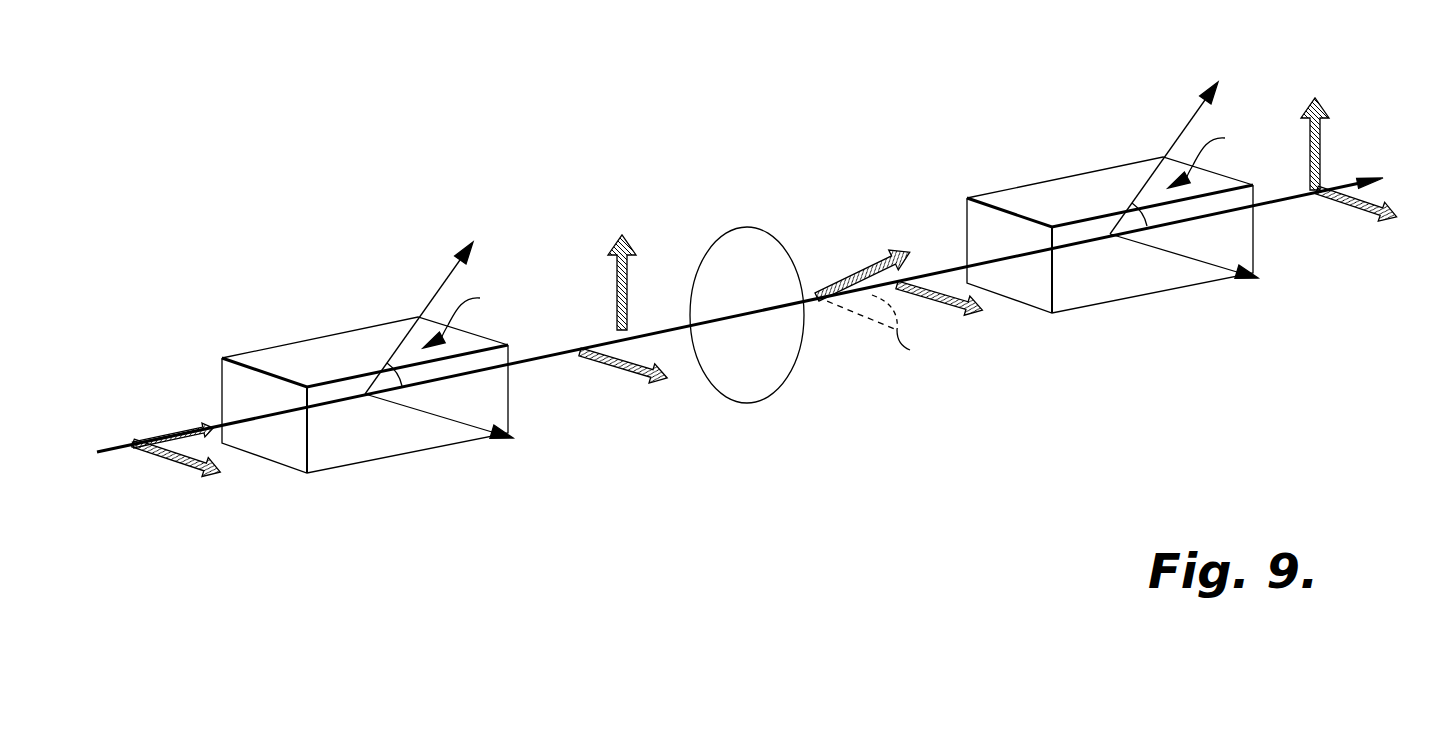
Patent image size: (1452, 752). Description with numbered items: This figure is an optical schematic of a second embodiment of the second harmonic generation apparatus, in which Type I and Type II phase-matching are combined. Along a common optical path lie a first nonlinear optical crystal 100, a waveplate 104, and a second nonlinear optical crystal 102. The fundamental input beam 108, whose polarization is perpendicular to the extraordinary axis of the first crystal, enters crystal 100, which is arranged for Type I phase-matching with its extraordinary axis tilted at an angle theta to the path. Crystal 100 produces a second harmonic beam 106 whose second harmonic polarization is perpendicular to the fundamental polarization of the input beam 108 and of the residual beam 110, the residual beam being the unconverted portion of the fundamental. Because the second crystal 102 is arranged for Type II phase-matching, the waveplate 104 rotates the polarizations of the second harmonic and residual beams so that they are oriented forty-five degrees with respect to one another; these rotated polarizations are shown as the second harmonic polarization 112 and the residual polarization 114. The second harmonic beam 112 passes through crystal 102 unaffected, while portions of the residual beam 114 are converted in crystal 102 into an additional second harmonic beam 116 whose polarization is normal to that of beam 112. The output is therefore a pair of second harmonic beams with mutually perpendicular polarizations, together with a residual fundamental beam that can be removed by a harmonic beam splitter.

The nonlinear optical crystal 100 is at (312, 337).
The nonlinear optical crystal 102 is at (1058, 177).
The waveplate 104 is at (748, 227).
The second harmonic beam 106 is at (615, 297).
The input beam 108 is at (160, 460).
The residual beam 110 is at (617, 368).
The second harmonic beam polarization 112 is at (990, 300).
The residual beam polarization 114 is at (860, 273).
The additional second harmonic beam 116 is at (1327, 160).